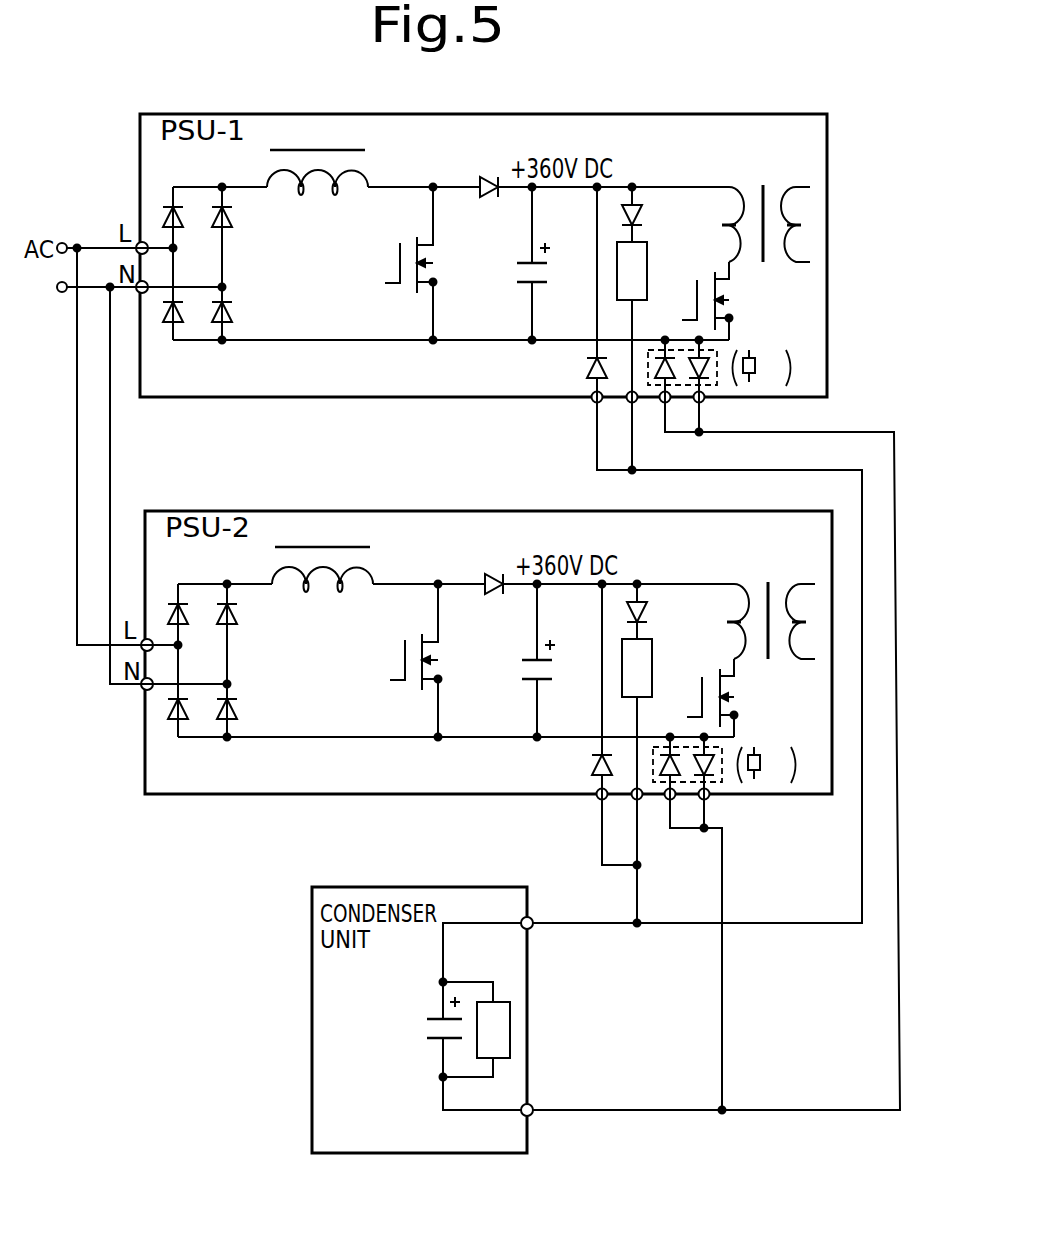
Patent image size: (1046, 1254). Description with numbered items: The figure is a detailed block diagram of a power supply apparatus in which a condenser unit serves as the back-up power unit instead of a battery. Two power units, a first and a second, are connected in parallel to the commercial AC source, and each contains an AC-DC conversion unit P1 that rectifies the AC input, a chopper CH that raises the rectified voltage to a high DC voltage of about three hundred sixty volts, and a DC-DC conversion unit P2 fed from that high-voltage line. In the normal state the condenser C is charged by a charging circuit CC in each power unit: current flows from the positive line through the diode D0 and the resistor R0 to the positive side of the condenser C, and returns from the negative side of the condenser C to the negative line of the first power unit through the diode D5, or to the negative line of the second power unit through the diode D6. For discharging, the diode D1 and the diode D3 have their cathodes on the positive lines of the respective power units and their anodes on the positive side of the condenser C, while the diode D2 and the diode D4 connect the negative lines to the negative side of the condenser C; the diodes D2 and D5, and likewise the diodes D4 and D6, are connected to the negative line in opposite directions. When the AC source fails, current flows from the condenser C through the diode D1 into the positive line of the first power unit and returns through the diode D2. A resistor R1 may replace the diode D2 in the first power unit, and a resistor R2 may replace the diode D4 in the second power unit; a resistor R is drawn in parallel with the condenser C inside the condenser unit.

The AC-DC conversion unit P1 is at (200, 438).
The chopper CH is at (320, 389).
The charging circuit CC is at (699, 492).
The DC-DC conversion unit P2 is at (768, 405).
The diode D0 is at (644, 208).
The resistor R0 is at (647, 280).
The diode D1 is at (582, 292).
The diode D2 is at (712, 385).
The diode D3 is at (587, 689).
The diode D4 is at (716, 783).
The diode D5 is at (676, 385).
The diode D6 is at (681, 783).
The resistor R1 is at (762, 367).
The resistor R2 is at (767, 764).
The condenser C is at (441, 1016).
The discharge resistor R is at (479, 1023).